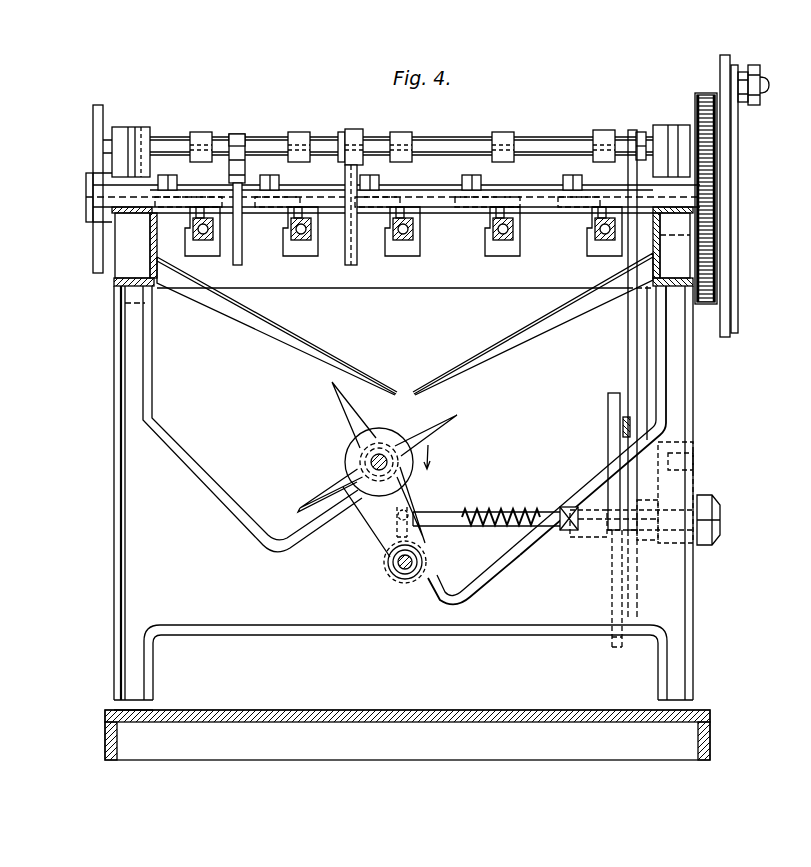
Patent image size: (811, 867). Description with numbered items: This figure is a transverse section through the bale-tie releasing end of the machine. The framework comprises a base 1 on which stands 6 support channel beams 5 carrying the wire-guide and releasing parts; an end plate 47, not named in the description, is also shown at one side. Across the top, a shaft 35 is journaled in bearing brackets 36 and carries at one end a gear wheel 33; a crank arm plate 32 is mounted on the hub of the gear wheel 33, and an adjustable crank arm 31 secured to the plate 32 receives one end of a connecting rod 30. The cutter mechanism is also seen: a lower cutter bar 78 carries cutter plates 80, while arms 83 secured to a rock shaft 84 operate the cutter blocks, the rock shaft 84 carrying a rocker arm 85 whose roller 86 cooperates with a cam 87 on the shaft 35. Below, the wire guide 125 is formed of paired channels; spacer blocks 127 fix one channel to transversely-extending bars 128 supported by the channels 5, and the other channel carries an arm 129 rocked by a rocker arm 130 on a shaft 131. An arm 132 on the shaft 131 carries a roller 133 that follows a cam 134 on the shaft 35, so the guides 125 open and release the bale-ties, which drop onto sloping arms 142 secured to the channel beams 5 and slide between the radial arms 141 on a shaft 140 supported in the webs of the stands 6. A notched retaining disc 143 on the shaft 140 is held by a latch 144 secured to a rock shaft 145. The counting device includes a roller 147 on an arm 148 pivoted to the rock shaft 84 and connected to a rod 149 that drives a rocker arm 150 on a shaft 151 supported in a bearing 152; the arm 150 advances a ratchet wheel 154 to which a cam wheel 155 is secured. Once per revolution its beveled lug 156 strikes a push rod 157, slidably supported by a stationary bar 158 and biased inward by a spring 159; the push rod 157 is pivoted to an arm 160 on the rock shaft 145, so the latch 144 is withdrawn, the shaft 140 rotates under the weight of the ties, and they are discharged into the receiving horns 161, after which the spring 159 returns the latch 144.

The base 1 is at (105, 736).
The channel beams 5 is at (118, 284).
The stands 6 is at (690, 377).
The connecting rod 30 is at (755, 70).
The adjustable crank arm 31 is at (738, 110).
The crank arm plate 32 is at (730, 151).
The gear wheel 33 is at (718, 176).
The shaft 35 is at (88, 196).
The bearing brackets 36 is at (131, 127).
The end plate 47 is at (93, 153).
The lower cutter bar 78 is at (382, 288).
The cutter plates 80 is at (488, 250).
The arms 83 is at (402, 134).
The rock shaft 84 is at (452, 140).
The rocker arm 85 is at (341, 136).
The roller 86 is at (357, 130).
The cam 87 is at (358, 258).
The wire guide 125 is at (291, 222).
The spacer blocks 127 is at (193, 222).
The transversely-extending bars 128 is at (310, 188).
The arm 129 is at (521, 222).
The rocker arm 130 is at (268, 176).
The shaft 131 is at (205, 190).
The arm 132 is at (250, 142).
The roller 133 is at (240, 134).
The cam 134 is at (243, 257).
The shaft 140 is at (347, 462).
The radial arms 141 is at (428, 440).
The sloping arms 142 is at (292, 322).
The retaining disc 143 is at (390, 433).
The latch 144 is at (366, 527).
The rock shaft 145 is at (385, 564).
The roller 147 is at (618, 136).
The arm 148 is at (642, 132).
The rod 149 is at (628, 338).
The rocker arm 150 is at (648, 545).
The shaft 151 is at (712, 498).
The bearing 152 is at (695, 465).
The ratchet wheel 154 is at (623, 425).
The cam wheel 155 is at (608, 441).
The beveled lug 156 is at (600, 540).
The push rod 157 is at (452, 511).
The stationary bar 158 is at (568, 507).
The spring 159 is at (527, 501).
The arm 160 is at (424, 545).
The receiving horns 161 is at (461, 601).